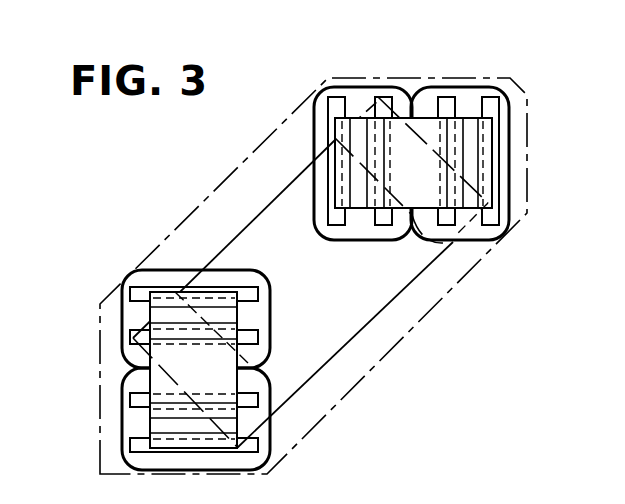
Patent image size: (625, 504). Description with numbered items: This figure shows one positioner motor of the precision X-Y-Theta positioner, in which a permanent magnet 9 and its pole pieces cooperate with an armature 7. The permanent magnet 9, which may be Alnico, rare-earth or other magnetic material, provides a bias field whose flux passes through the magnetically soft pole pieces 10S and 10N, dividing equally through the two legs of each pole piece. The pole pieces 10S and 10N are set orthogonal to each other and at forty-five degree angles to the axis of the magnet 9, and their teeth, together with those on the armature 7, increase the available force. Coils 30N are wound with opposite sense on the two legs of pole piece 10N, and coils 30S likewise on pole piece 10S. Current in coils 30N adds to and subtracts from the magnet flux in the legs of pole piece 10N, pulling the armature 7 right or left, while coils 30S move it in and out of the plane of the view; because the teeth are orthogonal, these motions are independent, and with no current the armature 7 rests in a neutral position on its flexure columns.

The armature 7 is at (403, 336).
The permanent magnet 9 is at (420, 277).
The north pole piece 10N is at (490, 167).
The south pole piece 10S is at (150, 310).
The coils on north pole piece 30N is at (433, 90).
The coils on south pole piece 30S is at (123, 355).